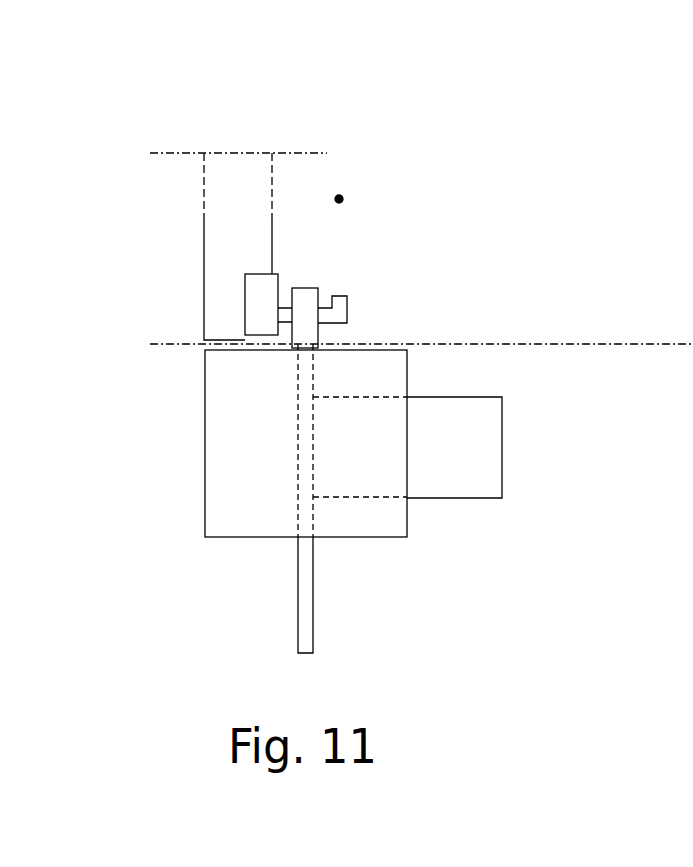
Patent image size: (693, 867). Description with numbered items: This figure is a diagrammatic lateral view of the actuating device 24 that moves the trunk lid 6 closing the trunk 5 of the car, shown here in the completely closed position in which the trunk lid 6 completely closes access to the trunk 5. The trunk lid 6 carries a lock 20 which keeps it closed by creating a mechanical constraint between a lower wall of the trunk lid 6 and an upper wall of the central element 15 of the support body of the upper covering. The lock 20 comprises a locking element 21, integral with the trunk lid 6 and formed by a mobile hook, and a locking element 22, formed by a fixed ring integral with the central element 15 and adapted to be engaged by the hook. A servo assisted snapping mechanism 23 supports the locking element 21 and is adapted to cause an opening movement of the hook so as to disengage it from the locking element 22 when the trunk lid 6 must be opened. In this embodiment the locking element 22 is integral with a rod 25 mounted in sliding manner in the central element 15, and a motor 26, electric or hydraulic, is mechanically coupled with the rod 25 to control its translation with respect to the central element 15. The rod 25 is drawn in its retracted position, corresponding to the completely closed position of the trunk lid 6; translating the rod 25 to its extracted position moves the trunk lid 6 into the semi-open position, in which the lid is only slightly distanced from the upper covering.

The trunk 5 is at (338, 195).
The trunk lid 6 is at (225, 247).
The central element 15 is at (246, 517).
The lock 20 is at (420, 260).
The locking element 21 is at (340, 308).
The locking element 22 is at (313, 295).
The servo assisted snapping mechanism 23 is at (266, 282).
The actuating device 24 is at (550, 401).
The rod 25 is at (306, 619).
The motor 26 is at (468, 478).